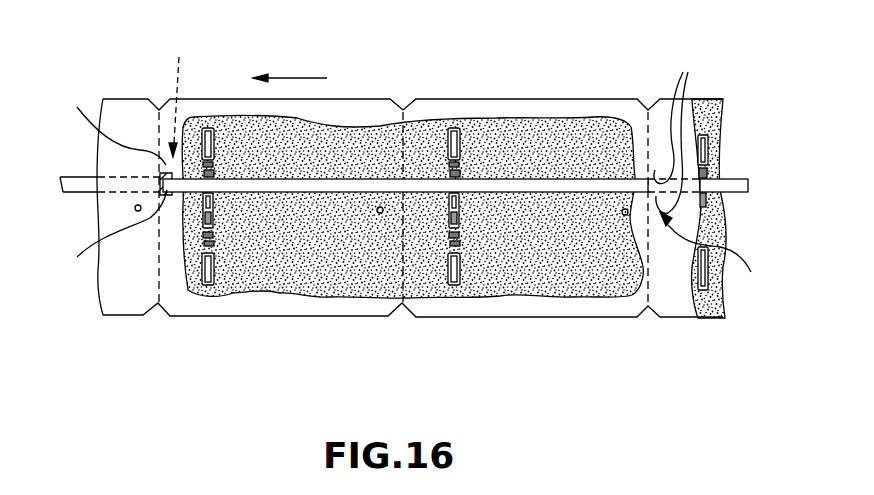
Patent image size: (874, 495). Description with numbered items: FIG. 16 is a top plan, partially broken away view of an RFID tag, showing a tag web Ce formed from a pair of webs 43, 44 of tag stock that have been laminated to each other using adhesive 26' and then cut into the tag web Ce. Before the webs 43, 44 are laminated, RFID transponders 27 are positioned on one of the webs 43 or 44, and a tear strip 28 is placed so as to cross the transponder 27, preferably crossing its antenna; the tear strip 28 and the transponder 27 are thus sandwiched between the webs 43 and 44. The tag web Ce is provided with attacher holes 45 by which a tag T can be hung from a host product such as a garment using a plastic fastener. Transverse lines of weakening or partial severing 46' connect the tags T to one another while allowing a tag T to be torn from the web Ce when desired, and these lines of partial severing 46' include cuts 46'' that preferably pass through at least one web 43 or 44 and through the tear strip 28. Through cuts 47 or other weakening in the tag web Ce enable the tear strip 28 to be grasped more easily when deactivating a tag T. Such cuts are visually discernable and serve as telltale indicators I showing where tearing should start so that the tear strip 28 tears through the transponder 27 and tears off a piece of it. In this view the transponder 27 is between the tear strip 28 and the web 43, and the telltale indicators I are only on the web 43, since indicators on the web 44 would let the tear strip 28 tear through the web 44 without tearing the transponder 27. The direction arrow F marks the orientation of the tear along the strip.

The adhesive 26' is at (500, 256).
The RFID transponder 27 is at (212, 127).
The tear strip 28 is at (340, 178).
The web 43 is at (626, 311).
The web 44 is at (128, 302).
The attacher holes 45 is at (134, 208).
The lines of weakening or partial severing 46' is at (525, 178).
The cuts 46'' is at (351, 184).
The through cuts 47 is at (376, 165).
The tag T is at (255, 318).
The tag web Ce is at (568, 318).
The force direction F is at (295, 77).
The telltale indicators I is at (462, 162).